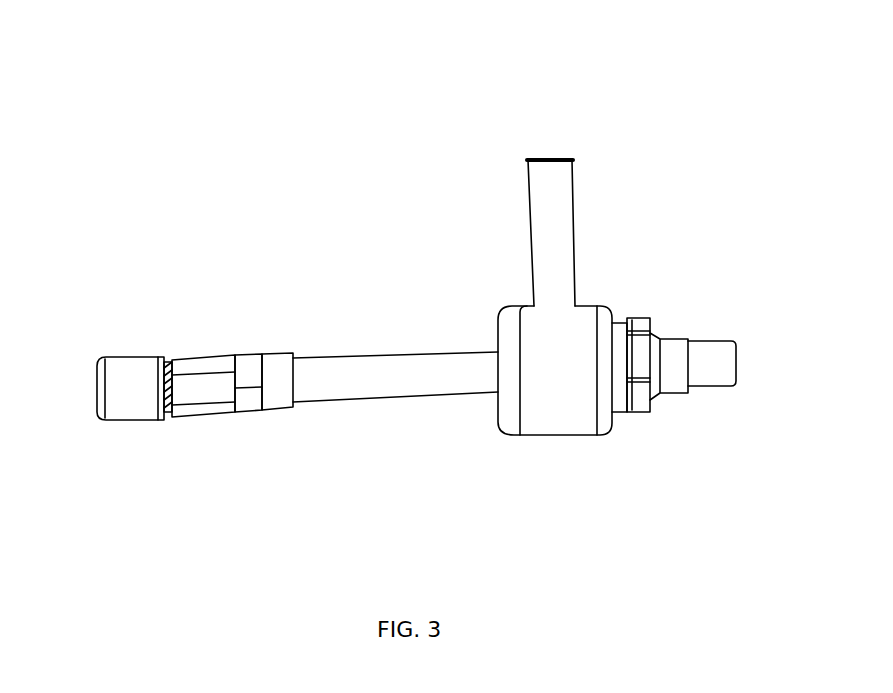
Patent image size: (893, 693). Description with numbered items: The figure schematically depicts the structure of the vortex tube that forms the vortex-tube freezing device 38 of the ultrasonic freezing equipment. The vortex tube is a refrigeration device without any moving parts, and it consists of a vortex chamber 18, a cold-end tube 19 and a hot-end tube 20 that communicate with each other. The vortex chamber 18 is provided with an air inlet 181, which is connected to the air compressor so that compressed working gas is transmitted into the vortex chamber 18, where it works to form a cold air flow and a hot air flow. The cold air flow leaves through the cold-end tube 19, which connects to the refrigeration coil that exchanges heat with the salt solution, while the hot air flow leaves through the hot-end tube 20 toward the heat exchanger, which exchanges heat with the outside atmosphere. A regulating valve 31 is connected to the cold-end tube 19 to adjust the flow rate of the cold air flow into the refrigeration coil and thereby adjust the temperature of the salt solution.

The vortex-tube freezing device 38 is at (236, 208).
The hot-end tube 20 is at (142, 382).
The vortex chamber 18 is at (557, 357).
The air inlet 181 is at (542, 161).
The regulating valve 31 is at (637, 353).
The cold-end tube 19 is at (697, 355).